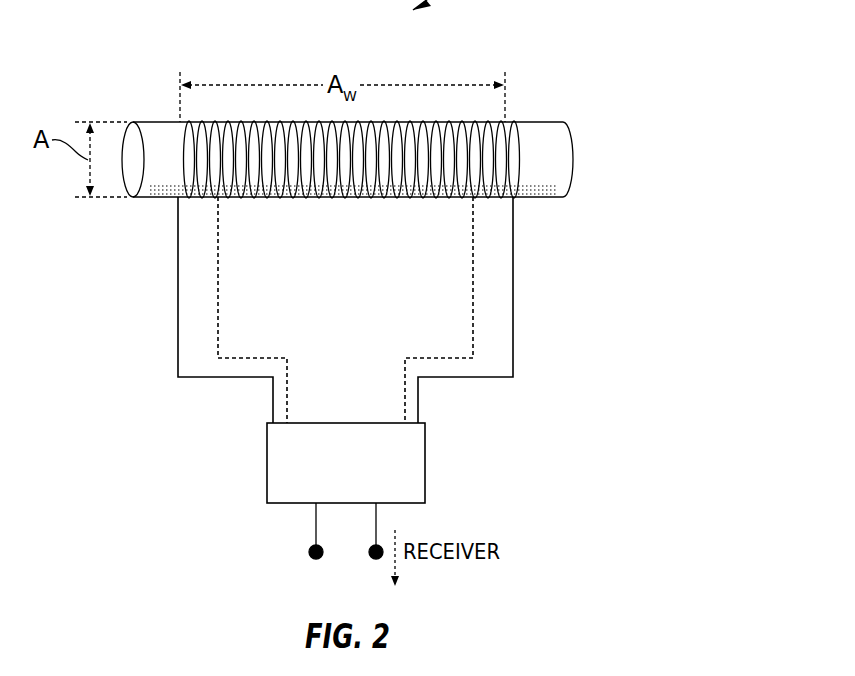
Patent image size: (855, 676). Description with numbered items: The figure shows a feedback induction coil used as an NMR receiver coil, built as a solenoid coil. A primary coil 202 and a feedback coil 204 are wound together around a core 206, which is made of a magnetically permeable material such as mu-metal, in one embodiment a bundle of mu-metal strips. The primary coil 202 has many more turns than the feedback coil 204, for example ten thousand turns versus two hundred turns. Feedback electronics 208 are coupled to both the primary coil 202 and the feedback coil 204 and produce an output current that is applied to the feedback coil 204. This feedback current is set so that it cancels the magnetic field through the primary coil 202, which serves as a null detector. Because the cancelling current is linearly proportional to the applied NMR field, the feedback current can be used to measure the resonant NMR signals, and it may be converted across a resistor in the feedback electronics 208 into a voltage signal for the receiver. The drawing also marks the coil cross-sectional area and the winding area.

The primary coil 202 is at (238, 200).
The feedback coil 204 is at (345, 198).
The core 206 is at (160, 121).
The feedback electronics 208 is at (432, 462).